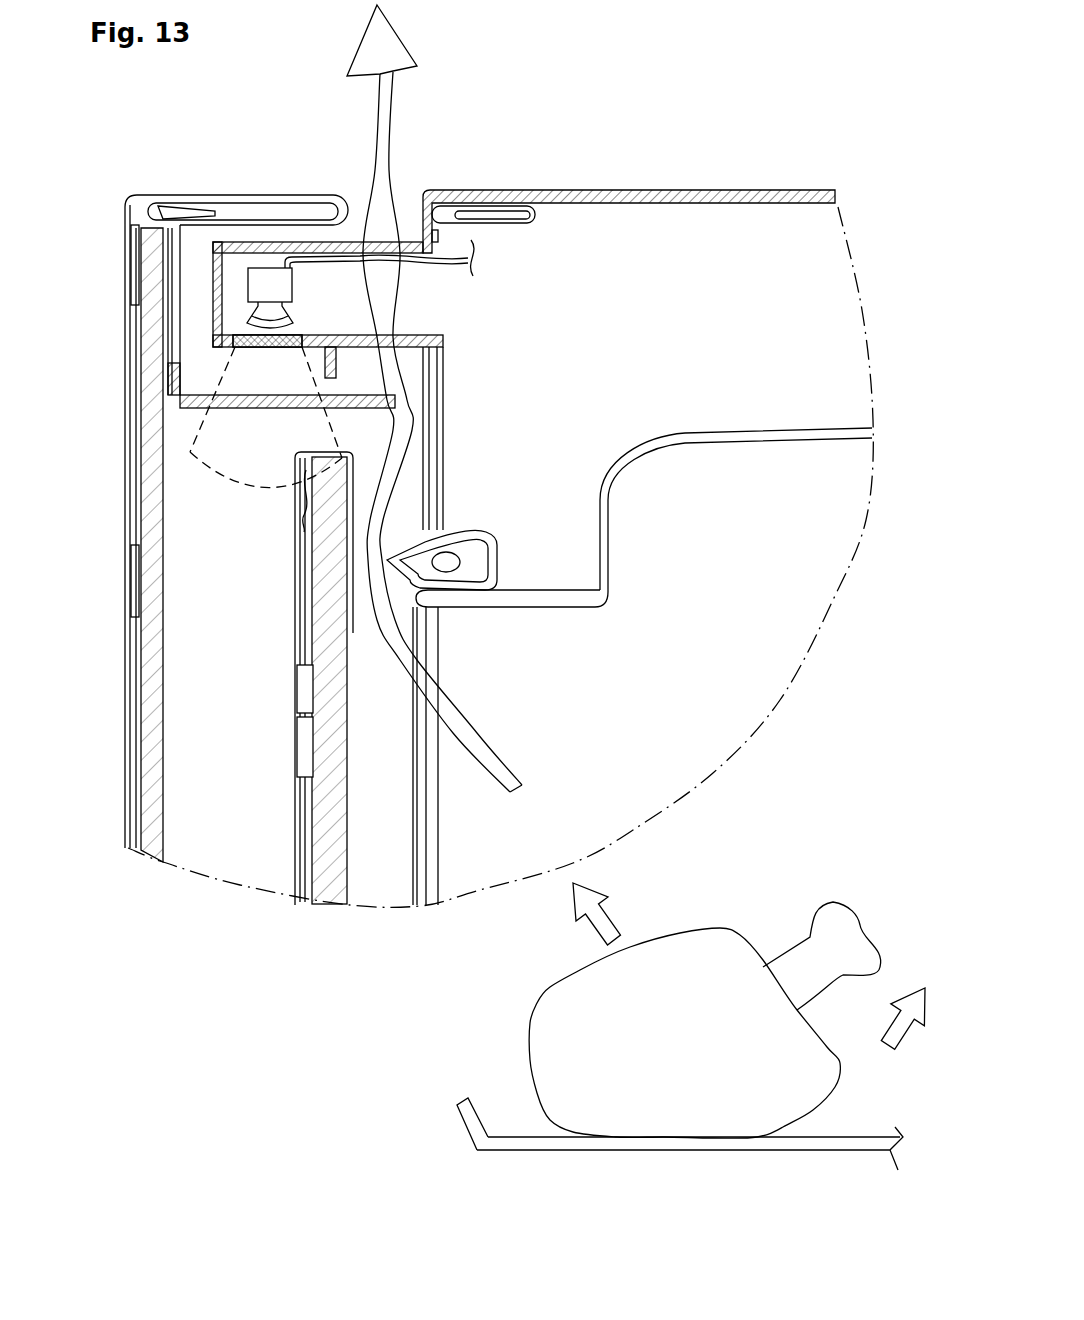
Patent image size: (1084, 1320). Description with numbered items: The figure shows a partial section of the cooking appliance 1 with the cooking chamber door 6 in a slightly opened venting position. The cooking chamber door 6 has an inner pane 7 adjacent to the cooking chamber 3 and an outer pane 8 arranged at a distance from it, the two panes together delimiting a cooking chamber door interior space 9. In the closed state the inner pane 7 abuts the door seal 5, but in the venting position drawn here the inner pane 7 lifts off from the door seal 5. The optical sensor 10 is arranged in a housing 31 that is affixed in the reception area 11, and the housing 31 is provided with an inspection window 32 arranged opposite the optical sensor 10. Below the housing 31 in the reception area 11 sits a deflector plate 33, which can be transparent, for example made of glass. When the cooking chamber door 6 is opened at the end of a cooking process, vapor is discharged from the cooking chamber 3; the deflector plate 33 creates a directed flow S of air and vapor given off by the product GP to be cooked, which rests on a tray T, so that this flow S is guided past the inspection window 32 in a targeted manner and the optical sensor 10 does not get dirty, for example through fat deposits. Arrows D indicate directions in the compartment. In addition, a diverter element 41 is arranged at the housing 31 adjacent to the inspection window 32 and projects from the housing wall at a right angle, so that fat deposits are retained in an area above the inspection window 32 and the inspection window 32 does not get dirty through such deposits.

The cooking appliance 1 is at (732, 147).
The cooking chamber 3 is at (750, 849).
The door seal 5 is at (472, 573).
The cooking chamber door 6 is at (125, 648).
The inner pane 7 is at (330, 878).
The outer pane 8 is at (153, 850).
The cooking chamber door interior space 9 is at (241, 741).
The optical sensor 10 is at (240, 290).
The reception area 11 is at (226, 384).
The housing 31 is at (235, 245).
The inspection window 32 is at (262, 333).
The deflector plate 33 is at (247, 405).
The diverter element 41 is at (352, 336).
The flow S is at (390, 96).
The direction of goods D is at (615, 910).
The product to be cooked GP is at (545, 1032).
The shelf / tray T is at (527, 1143).